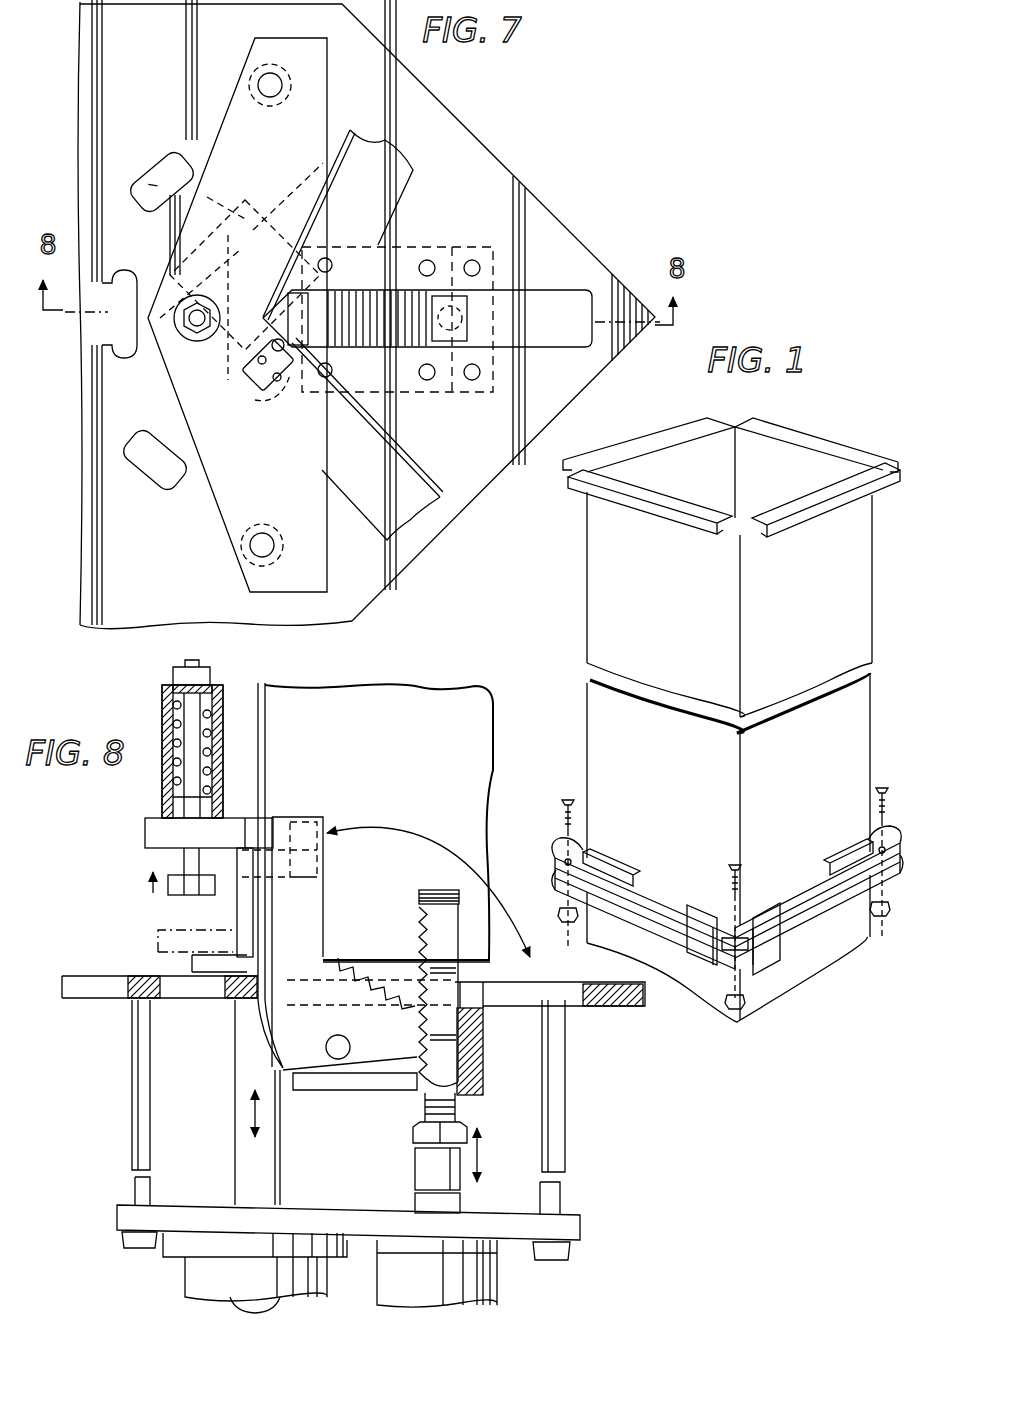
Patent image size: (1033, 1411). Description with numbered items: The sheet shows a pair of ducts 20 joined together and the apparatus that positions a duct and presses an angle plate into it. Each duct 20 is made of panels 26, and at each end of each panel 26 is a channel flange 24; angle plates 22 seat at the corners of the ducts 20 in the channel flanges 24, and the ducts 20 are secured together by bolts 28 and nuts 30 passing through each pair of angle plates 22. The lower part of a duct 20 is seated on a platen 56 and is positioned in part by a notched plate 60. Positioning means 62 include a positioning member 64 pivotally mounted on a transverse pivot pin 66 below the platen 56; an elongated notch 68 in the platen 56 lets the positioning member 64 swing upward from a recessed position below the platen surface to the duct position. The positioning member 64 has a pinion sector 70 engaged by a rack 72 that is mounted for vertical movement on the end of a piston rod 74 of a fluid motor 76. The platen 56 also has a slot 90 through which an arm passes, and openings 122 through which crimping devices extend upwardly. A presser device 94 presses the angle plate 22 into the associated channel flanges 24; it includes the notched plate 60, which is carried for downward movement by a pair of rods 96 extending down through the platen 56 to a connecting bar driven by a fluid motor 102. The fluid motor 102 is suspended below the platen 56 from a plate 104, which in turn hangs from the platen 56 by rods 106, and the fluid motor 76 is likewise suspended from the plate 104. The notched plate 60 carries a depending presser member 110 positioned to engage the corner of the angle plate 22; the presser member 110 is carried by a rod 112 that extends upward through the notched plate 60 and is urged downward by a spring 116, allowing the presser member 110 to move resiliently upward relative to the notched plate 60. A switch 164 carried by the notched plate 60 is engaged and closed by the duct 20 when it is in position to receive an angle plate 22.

In FIG. 7, the duct 20 is at (362, 490).
In FIG. 1, the duct 20 is at (604, 626).
In FIG. 8, the duct 20 is at (421, 705).
In FIG. 1, the angle plate 22 is at (615, 862).
In FIG. 8, the angle plate 22 is at (158, 945).
In FIG. 1, the channel flange 24 is at (660, 525).
In FIG. 8, the channel flange 24 is at (215, 992).
In FIG. 1, the panel 26 is at (592, 750).
In FIG. 1, the bolt 28 is at (560, 818).
In FIG. 1, the nut 30 is at (558, 918).
In FIG. 7, the platen 56 is at (467, 490).
In FIG. 8, the platen 56 is at (613, 1008).
In FIG. 7, the notched plate 60 is at (233, 513).
In FIG. 8, the notched plate 60 is at (227, 827).
In FIG. 8, the positioning means 62 is at (360, 904).
In FIG. 7, the positioning member 64 is at (397, 319).
In FIG. 8, the positioning member 64 is at (325, 820).
In FIG. 8, the transverse pivot pin 66 is at (335, 1060).
In FIG. 8, the elongated notch 68 is at (513, 998).
In FIG. 7, the pinion sector 70 is at (395, 300).
In FIG. 8, the pinion sector 70 is at (366, 968).
In FIG. 7, the rack 72 is at (470, 308).
In FIG. 8, the rack 72 is at (418, 928).
In FIG. 8, the piston rod 74 is at (415, 1172).
In FIG. 8, the fluid motor 76 is at (493, 1295).
In FIG. 7, the slot 90 is at (100, 328).
In FIG. 8, the presser device 94 is at (141, 833).
In FIG. 8, the rods 96 is at (235, 1182).
In FIG. 8, the fluid motor 102 is at (313, 1282).
In FIG. 8, the plate 104 is at (298, 1218).
In FIG. 8, the rods 106 is at (132, 1117).
In FIG. 8, the presser member 110 is at (173, 890).
In FIG. 8, the rod 112 is at (177, 855).
In FIG. 8, the spring 116 is at (223, 740).
In FIG. 7, the openings 122 is at (165, 160).
In FIG. 7, the switch 164 is at (278, 425).